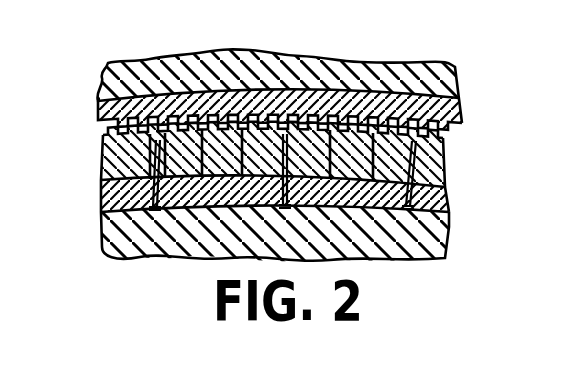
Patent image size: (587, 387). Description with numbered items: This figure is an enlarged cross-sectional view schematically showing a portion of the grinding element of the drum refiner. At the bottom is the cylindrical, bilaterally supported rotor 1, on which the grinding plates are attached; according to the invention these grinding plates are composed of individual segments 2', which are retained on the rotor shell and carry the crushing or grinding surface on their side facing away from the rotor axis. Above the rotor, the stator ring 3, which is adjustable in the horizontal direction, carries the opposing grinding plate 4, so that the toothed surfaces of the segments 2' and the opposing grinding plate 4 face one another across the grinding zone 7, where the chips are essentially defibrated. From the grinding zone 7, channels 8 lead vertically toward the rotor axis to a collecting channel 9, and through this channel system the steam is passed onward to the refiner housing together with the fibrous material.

The rotor 1 is at (102, 247).
The grinding plate segments 2' is at (300, 208).
The stator rings 3 is at (398, 63).
The opposing grinding plates 4 is at (97, 118).
The grinding zone 7 is at (107, 131).
The channels 8 is at (101, 172).
The collecting channel 9 is at (154, 243).